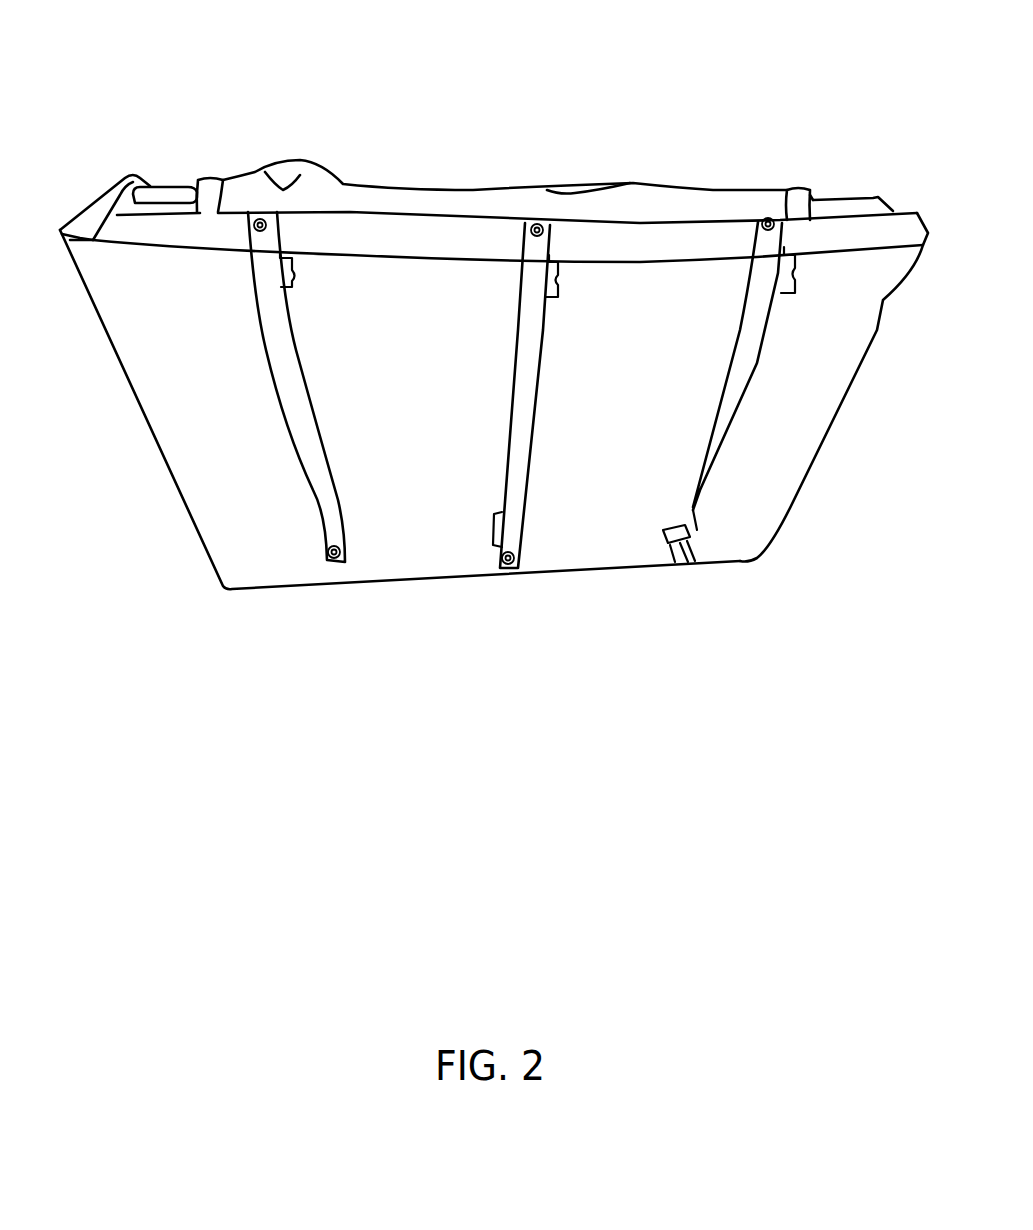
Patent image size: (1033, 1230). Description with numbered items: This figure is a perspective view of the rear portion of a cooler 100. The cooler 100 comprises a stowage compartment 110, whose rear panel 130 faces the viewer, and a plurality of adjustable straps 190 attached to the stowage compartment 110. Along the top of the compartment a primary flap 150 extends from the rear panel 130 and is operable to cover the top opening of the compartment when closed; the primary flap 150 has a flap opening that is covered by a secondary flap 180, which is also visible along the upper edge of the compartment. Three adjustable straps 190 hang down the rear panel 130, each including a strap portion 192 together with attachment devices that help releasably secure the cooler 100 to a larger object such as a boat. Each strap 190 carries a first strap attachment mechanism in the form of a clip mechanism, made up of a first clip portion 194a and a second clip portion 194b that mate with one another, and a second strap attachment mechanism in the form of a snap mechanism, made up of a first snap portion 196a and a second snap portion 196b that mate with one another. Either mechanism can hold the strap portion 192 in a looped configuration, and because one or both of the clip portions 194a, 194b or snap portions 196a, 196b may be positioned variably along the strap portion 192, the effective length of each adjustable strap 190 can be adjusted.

The cooler 100 is at (223, 57).
The stowage compartment 110 is at (107, 446).
The rear panel 130 is at (127, 305).
The primary flap 150 is at (167, 178).
The secondary flap 180 is at (410, 183).
The adjustable strap 190 is at (271, 424).
The strap portion 192 is at (295, 366).
The first clip portion 194a is at (490, 519).
The second clip portion 194b is at (565, 282).
The first snap portion 196a is at (322, 550).
The second snap portion 196b is at (250, 224).